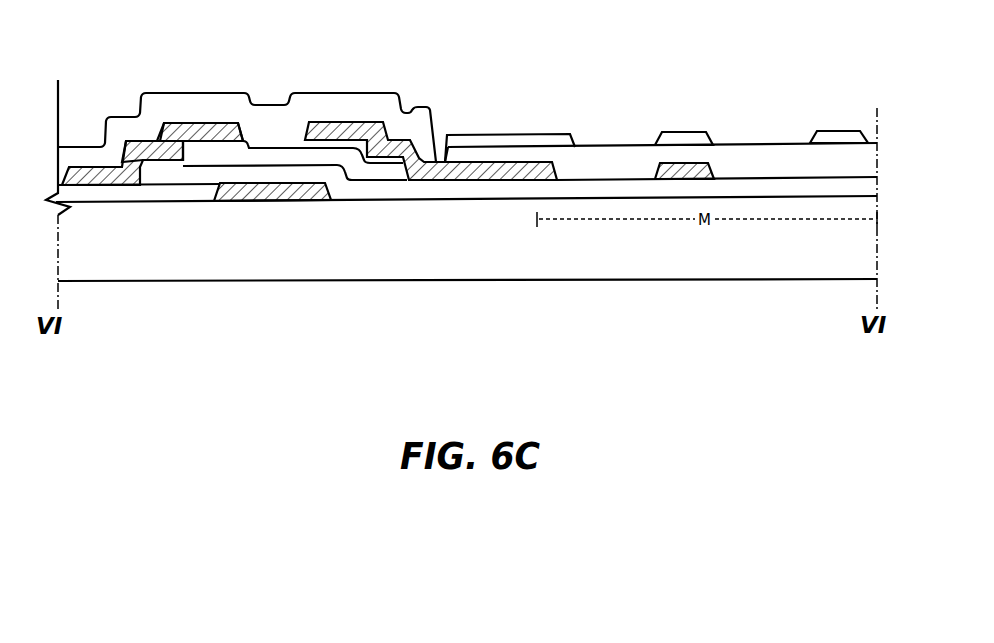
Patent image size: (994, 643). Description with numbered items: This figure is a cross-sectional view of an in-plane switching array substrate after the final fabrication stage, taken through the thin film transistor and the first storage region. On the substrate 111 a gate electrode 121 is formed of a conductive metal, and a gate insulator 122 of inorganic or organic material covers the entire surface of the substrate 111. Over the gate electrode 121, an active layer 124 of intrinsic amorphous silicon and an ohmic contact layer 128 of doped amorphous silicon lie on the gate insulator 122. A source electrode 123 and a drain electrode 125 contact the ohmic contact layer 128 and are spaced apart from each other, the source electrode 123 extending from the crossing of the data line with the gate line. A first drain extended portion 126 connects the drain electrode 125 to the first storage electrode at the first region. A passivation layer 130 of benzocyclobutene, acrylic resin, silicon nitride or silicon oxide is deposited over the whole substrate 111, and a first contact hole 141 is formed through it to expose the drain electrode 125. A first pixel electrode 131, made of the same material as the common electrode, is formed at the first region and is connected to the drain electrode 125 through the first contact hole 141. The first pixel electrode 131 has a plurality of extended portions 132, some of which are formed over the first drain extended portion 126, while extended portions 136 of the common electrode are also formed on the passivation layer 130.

The substrate 111 is at (494, 251).
The gate electrode 121 is at (283, 195).
The gate insulator 122 is at (629, 186).
The source electrode 123 is at (214, 120).
The active layer 124 is at (190, 168).
The drain electrode 125 is at (325, 122).
The first drain extended portion 126 is at (715, 170).
The ohmic contact layer 128 is at (172, 125).
The passivation layer 130 is at (273, 108).
The first pixel electrode 131 is at (513, 133).
The extended portions of the first pixel electrode 132 is at (678, 132).
The extended portions of the common electrode 136 is at (837, 135).
The first contact hole 141 is at (441, 140).